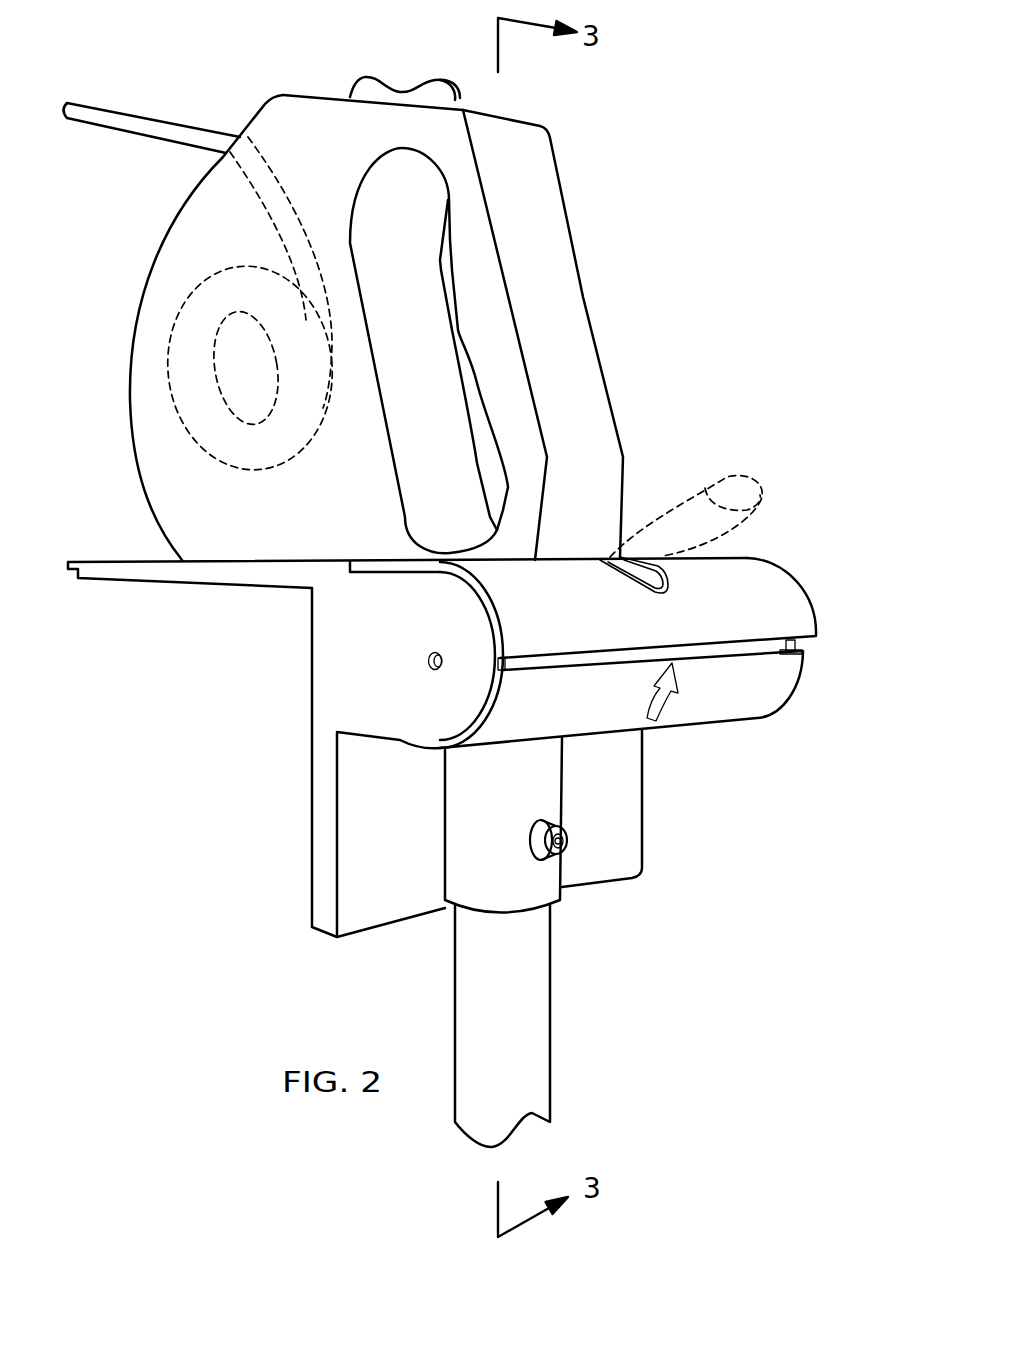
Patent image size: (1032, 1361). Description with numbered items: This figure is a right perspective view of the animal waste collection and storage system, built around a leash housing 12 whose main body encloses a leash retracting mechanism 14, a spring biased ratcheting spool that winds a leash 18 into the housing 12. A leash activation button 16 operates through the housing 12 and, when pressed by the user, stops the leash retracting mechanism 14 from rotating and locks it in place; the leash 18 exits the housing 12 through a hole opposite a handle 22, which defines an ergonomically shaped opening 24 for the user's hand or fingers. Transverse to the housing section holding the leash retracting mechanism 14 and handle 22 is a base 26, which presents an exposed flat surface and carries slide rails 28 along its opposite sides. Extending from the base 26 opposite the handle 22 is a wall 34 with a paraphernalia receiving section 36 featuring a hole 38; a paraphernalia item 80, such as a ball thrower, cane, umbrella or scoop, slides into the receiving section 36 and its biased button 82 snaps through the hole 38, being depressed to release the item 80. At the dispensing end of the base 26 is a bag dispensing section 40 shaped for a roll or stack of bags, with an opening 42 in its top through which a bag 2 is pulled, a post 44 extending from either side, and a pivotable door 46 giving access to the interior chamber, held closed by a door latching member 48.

The bag 2 is at (730, 476).
The leash housing 12 is at (255, 105).
The leash retracting mechanism 14 is at (213, 357).
The leash activation button 16 is at (375, 77).
The leash 18 is at (113, 128).
The handle 22 is at (585, 298).
The opening 24 is at (403, 220).
The base 26 is at (111, 556).
The slide rail 28 is at (170, 587).
The wall 34 is at (643, 798).
The paraphernalia receiving section 36 is at (540, 770).
The hole 38 is at (530, 833).
The bag dispensing section 40 is at (773, 582).
The opening 42 is at (668, 587).
The post 44 is at (431, 668).
The door 46 is at (740, 703).
The door latching member 48 is at (800, 663).
The paraphernalia item 80 is at (552, 1015).
The button 82 is at (570, 843).